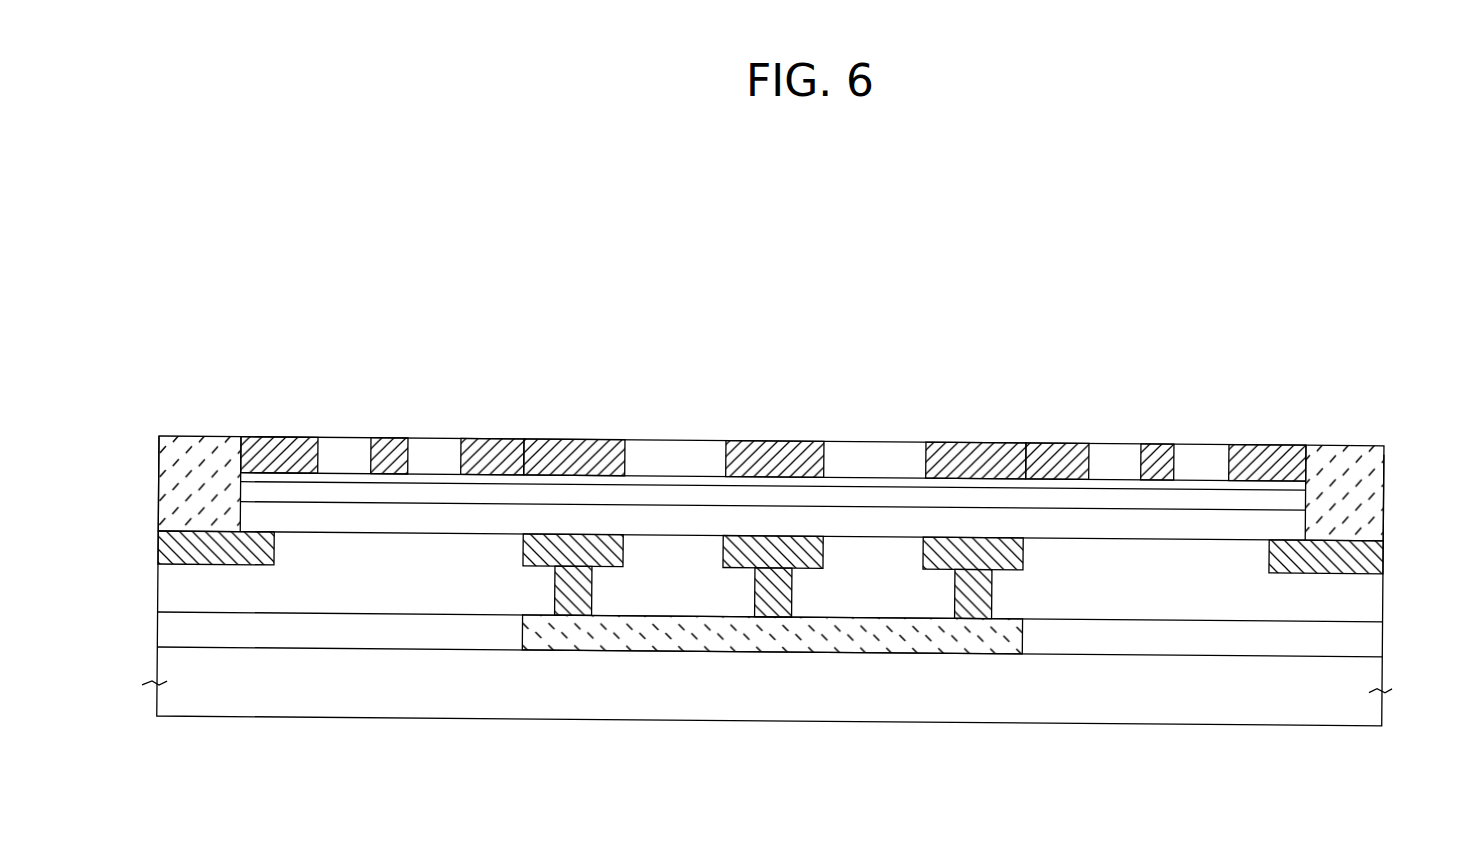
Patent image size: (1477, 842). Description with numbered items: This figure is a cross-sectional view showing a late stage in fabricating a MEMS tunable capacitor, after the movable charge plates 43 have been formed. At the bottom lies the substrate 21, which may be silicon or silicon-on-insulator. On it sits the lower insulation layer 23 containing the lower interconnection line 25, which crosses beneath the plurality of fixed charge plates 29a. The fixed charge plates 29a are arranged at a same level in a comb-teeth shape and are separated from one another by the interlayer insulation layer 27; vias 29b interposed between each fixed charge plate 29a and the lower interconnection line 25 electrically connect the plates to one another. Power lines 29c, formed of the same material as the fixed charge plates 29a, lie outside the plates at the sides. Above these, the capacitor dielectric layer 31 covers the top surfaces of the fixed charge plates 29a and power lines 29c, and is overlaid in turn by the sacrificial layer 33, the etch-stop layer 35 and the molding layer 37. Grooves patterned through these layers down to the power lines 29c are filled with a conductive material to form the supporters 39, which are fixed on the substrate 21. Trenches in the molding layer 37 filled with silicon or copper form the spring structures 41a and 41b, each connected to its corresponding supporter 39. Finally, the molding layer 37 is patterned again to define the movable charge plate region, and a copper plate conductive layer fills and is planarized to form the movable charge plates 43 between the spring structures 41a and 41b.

The substrate 21 is at (1378, 674).
The lower insulation layer 23 is at (165, 629).
The lower interconnection line 25 is at (800, 647).
The interlayer insulation layer 27 is at (165, 592).
The fixed charge plates 29a is at (623, 549).
The vias 29b is at (580, 582).
The power lines 29c is at (165, 548).
The capacitor dielectric layer 31 is at (1287, 516).
The sacrificial layer 33 is at (1287, 494).
The etch-stop layer 35 is at (1287, 473).
The molding layer 37 is at (690, 446).
The supporters 39 is at (167, 478).
The spring structure 41a is at (478, 435).
The spring structure 41b is at (1248, 435).
The movable charge plates 43 is at (577, 435).